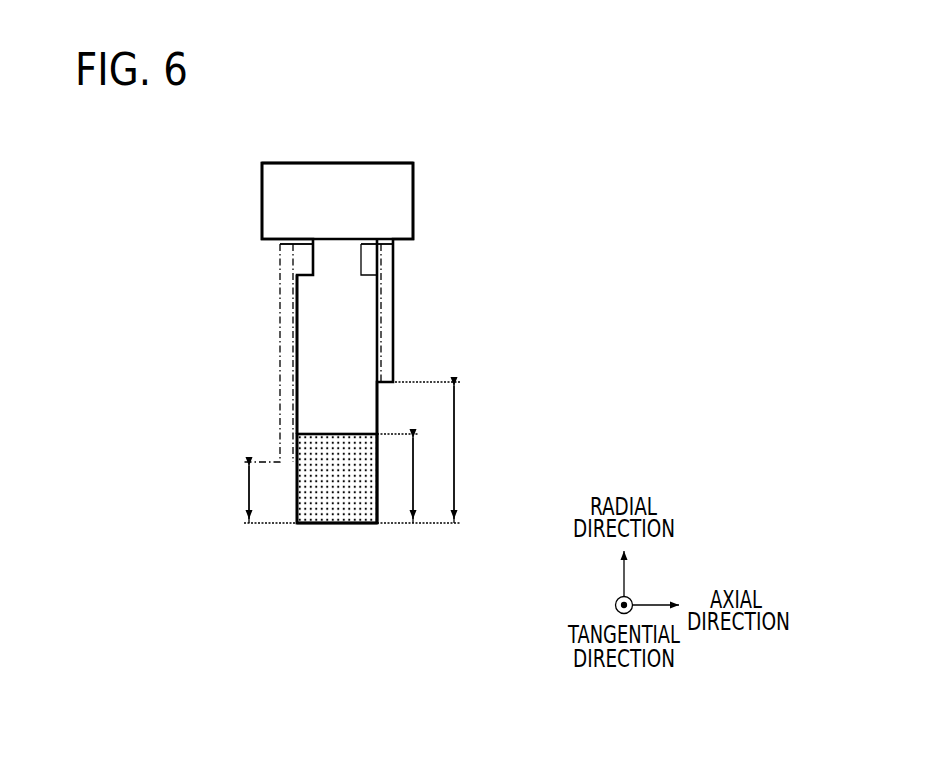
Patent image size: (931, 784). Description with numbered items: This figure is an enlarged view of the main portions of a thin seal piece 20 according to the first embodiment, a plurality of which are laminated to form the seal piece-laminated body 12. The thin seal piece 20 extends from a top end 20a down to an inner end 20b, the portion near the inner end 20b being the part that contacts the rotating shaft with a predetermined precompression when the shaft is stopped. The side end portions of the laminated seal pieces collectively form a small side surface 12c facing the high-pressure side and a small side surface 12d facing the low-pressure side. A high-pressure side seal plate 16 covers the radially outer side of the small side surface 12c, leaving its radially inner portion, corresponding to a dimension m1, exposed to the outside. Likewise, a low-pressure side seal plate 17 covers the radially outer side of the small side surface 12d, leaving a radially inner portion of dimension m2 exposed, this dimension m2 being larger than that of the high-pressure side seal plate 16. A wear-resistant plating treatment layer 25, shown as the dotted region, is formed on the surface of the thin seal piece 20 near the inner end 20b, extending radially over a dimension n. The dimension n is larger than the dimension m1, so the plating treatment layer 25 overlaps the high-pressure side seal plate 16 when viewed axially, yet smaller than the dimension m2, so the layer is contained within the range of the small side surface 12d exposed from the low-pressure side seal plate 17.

The thin seal piece 20 is at (482, 142).
The seal piece-laminated body 12 is at (337, 201).
The top surface of root portion 20a is at (333, 163).
The inner end 20b is at (317, 524).
The small side surface 12c is at (293, 360).
The small side surface 12d is at (381, 316).
The high-pressure side seal plate 16 is at (280, 255).
The low-pressure side seal plate 17 is at (393, 252).
The plating treatment layer 25 is at (348, 507).
The dimension m1 is at (246, 490).
The dimension m2 is at (455, 427).
The dimension n is at (414, 478).